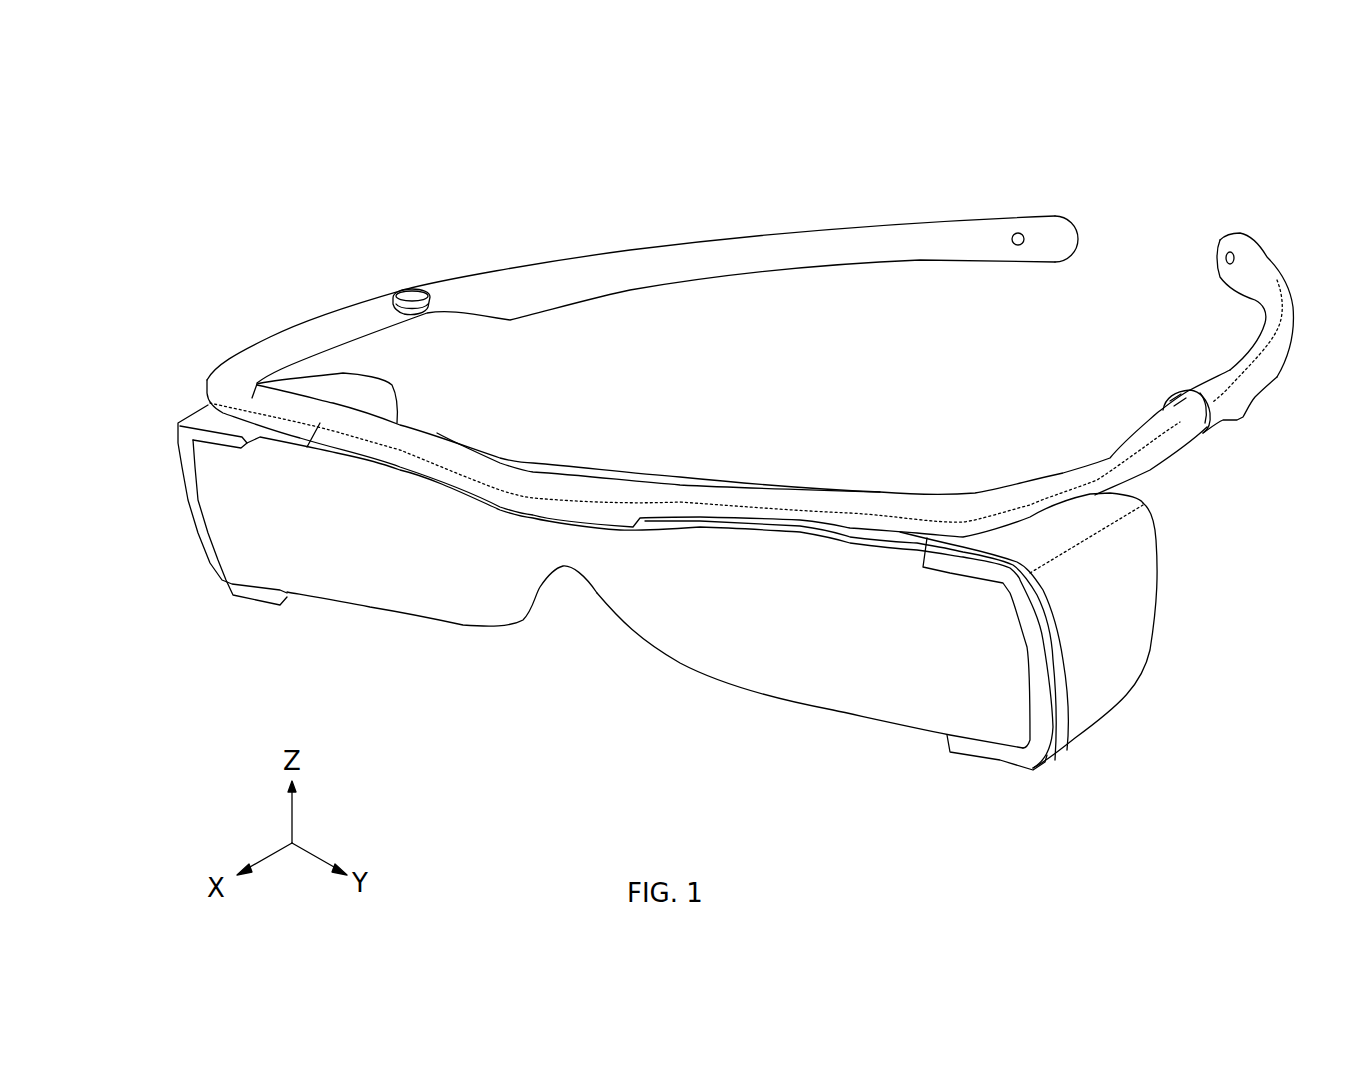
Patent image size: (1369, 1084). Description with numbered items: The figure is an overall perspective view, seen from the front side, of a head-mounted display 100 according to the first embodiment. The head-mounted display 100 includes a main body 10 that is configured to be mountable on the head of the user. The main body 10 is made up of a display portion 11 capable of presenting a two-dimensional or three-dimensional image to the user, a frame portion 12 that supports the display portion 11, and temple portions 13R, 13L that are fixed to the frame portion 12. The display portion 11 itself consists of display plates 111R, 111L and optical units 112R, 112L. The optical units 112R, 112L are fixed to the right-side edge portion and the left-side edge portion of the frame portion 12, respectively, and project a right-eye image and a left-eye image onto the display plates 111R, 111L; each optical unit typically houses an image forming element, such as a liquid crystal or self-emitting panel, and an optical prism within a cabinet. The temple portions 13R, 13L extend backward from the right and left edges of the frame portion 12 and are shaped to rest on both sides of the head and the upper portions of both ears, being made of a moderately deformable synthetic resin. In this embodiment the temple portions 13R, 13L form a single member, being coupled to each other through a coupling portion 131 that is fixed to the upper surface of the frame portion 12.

The head-mounted display 100 is at (1147, 162).
The main body 10 is at (630, 464).
The display portion 11 is at (730, 760).
The frame portion 12 is at (533, 463).
The temple portion 13R is at (748, 255).
The temple portion 13L is at (1237, 357).
The display plate 111R is at (433, 593).
The display plate 111L is at (703, 640).
The optical unit 112R is at (343, 370).
The optical unit 112L is at (1143, 602).
The coupling portion 131 is at (323, 423).